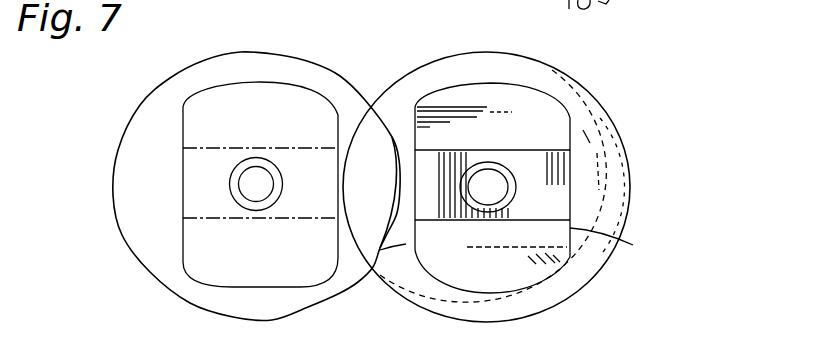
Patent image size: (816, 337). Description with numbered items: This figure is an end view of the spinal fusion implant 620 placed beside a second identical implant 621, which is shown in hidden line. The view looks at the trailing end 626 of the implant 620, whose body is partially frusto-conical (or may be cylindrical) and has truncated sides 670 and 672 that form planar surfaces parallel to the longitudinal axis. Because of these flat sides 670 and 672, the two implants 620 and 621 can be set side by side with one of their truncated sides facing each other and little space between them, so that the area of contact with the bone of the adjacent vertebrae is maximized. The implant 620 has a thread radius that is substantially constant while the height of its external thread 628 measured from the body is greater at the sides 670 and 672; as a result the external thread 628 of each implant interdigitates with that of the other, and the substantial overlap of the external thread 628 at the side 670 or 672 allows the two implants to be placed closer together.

The second identical implant 621 is at (137, 98).
The spinal fusion implant 620 is at (612, 103).
The truncated side 670 is at (380, 250).
The trailing end 626 is at (521, 270).
The truncated side 672 is at (627, 245).
The external thread 628 is at (560, 294).